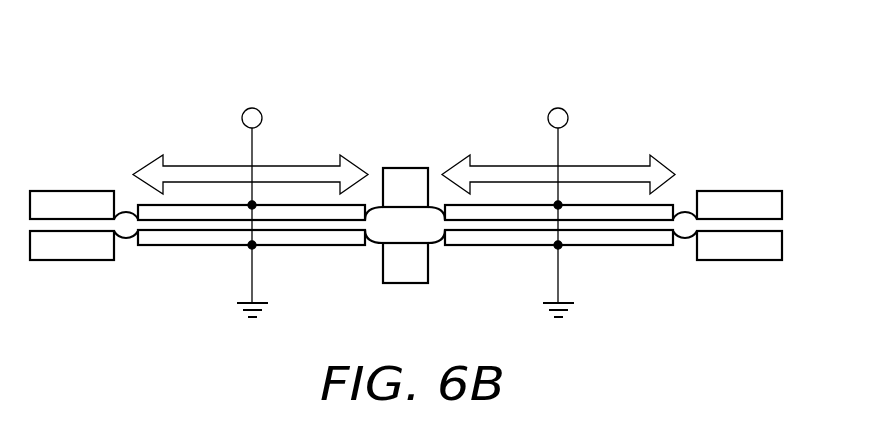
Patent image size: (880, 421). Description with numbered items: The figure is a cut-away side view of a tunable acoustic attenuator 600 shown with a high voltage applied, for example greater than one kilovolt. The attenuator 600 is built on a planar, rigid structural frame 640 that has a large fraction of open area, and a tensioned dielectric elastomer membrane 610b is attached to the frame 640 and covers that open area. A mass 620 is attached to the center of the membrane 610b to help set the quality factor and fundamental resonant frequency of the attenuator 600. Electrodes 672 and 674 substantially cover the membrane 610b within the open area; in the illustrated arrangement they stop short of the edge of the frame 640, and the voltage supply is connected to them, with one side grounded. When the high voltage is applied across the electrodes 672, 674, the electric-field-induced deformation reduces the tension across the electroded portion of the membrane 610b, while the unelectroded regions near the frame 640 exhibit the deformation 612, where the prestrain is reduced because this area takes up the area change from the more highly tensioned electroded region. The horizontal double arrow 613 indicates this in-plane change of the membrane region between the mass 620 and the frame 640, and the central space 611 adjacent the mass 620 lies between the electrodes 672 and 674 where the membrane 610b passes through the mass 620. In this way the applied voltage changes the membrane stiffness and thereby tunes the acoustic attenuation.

The tunable acoustic attenuator 600 is at (78, 156).
The deformation 612 is at (133, 203).
The mass 620 is at (410, 178).
The chamber 611 is at (410, 227).
The flow direction arrow 613 is at (492, 170).
The electrode 672 is at (612, 207).
The electrode 674 is at (625, 244).
The membrane 610b is at (485, 226).
The frame 640 is at (750, 197).